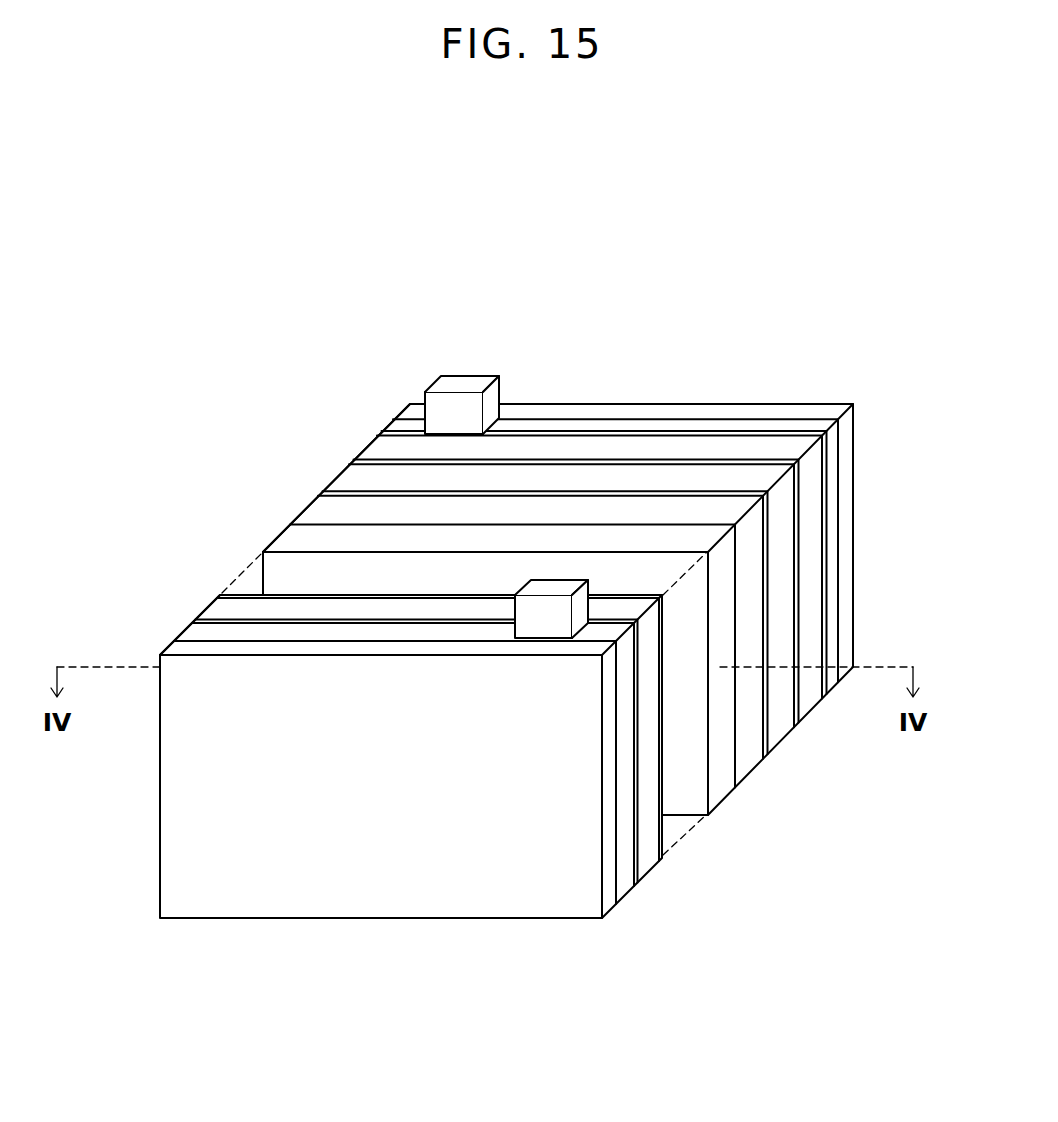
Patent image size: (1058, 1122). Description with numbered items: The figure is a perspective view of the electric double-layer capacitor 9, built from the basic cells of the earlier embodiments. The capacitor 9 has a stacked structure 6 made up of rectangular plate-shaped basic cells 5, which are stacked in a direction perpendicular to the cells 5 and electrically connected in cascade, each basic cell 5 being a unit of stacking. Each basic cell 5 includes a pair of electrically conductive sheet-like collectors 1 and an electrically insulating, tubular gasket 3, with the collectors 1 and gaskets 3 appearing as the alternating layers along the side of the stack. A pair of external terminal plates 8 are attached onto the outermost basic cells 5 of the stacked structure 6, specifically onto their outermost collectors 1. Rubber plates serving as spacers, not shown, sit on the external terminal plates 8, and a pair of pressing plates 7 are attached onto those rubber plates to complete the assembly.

The collector 1 is at (822, 592).
The gasket 3 is at (812, 607).
The basic cell 5 is at (354, 449).
The stacked structure 6 is at (247, 395).
The pressing plate 7 is at (842, 445).
The external terminal plate 8 is at (833, 477).
The electric double-layer capacitor 9 is at (672, 357).